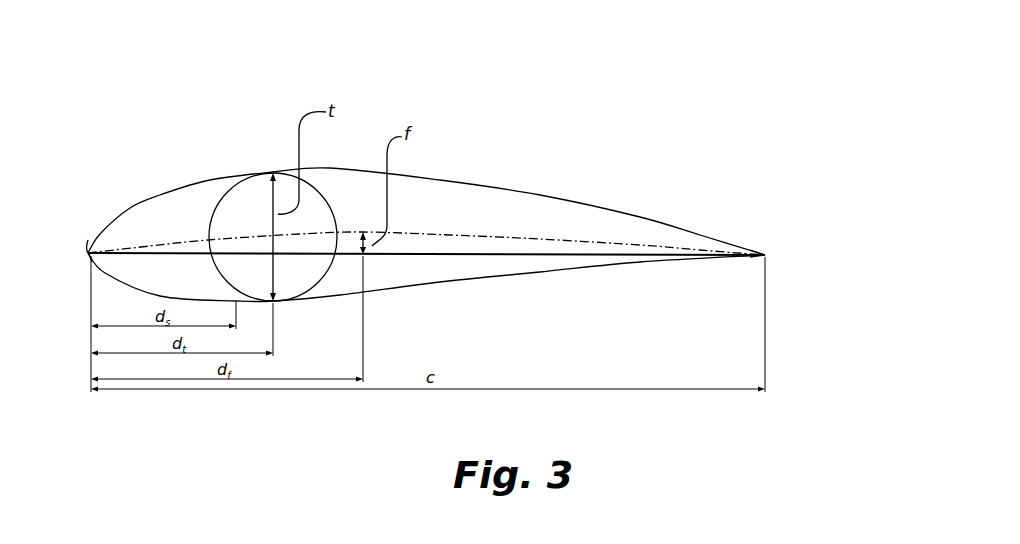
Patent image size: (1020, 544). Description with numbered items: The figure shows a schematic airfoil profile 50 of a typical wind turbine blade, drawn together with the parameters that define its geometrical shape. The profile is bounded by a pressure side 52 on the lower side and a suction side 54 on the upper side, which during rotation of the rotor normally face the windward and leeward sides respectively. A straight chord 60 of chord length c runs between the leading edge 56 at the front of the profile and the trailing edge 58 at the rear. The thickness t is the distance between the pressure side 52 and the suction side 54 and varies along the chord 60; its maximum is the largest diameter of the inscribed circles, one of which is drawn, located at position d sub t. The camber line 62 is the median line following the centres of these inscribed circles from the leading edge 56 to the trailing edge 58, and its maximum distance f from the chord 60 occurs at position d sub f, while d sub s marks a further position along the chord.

The airfoil profile 50 is at (426, 192).
The pressure side 52 is at (558, 278).
The suction side 54 is at (511, 184).
The leading edge 56 is at (88, 253).
The trailing edge 58 is at (765, 255).
The chord 60 is at (592, 255).
The camber line 62 is at (418, 232).